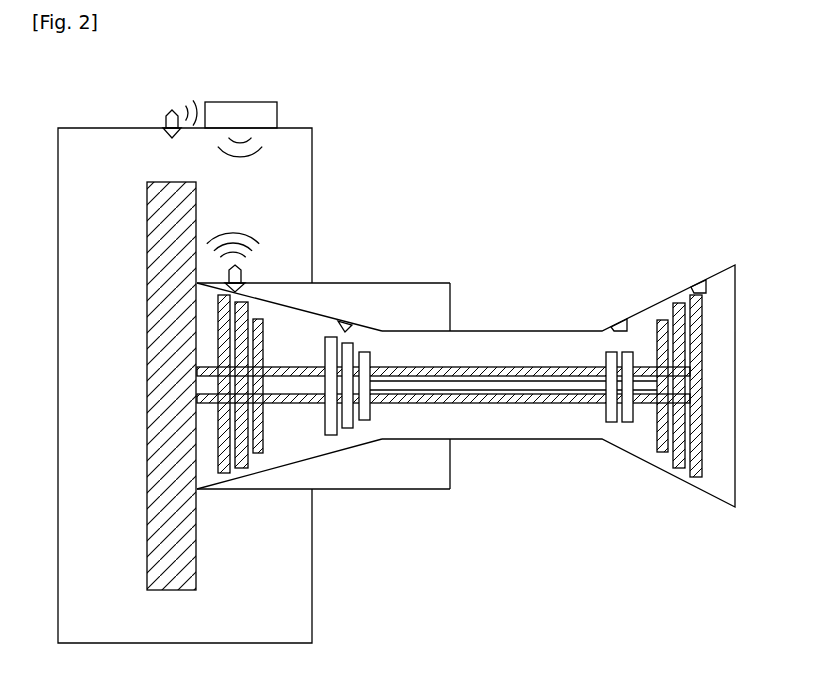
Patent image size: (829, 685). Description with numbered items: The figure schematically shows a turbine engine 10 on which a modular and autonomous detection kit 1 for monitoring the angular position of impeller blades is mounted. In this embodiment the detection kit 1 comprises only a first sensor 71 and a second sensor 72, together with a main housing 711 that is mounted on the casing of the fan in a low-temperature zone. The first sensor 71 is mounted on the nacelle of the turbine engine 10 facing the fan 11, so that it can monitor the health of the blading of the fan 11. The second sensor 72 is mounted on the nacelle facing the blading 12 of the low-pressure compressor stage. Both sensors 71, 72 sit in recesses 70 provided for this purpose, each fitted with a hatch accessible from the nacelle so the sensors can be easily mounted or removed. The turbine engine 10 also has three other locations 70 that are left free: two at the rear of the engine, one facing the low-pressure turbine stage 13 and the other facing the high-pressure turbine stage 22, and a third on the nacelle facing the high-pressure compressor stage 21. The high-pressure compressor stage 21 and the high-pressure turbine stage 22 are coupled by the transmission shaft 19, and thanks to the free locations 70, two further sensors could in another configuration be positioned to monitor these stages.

The detection kit 1 is at (300, 119).
The turbine engine 10 is at (485, 442).
The fan 11 is at (176, 588).
The blading of the low-pressure compressor stage 12 is at (242, 466).
The low-pressure turbine stage 13 is at (676, 466).
The transmission shaft 19 is at (525, 386).
The high-pressure compressor stage 21 is at (348, 428).
The high-pressure turbine stage 22 is at (612, 424).
The recesses 70 is at (166, 139).
The first sensor 71 is at (166, 120).
The main housing 711 is at (241, 113).
The second sensor 72 is at (241, 272).